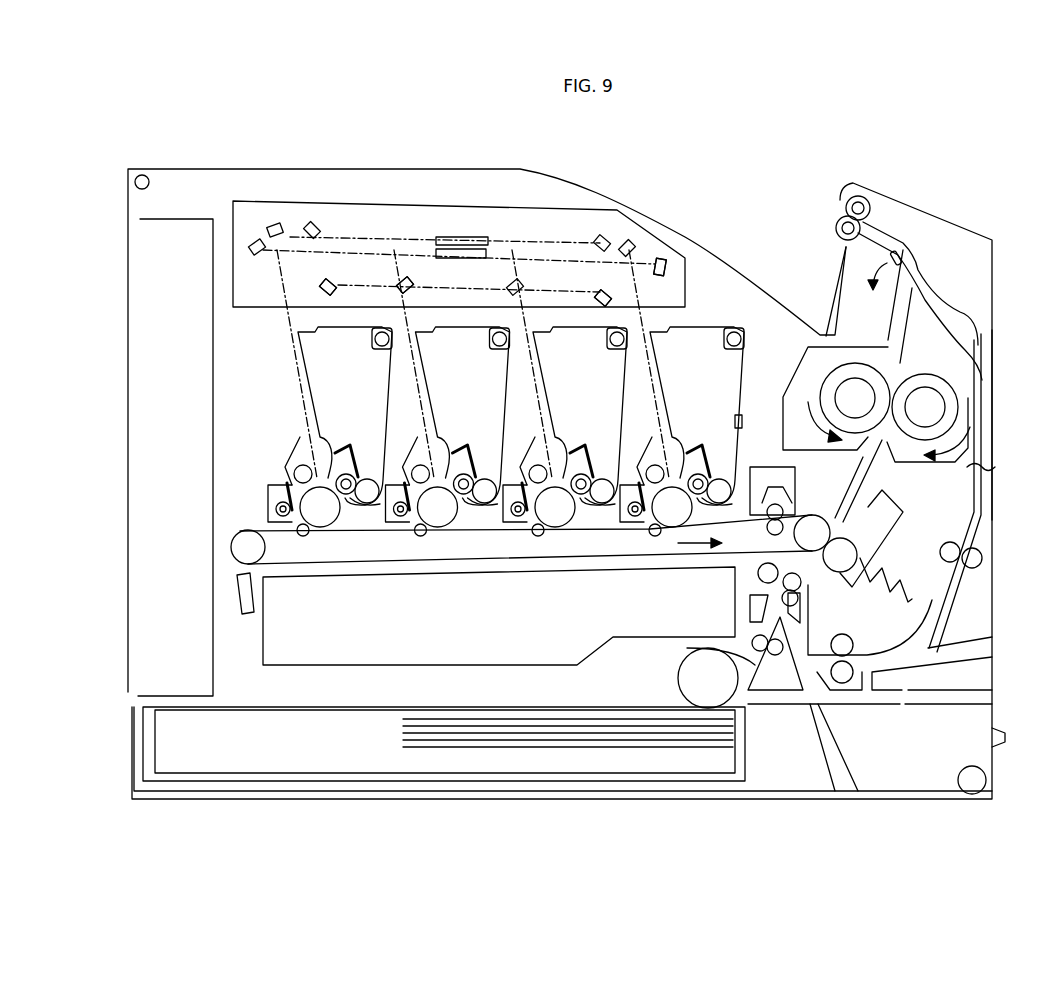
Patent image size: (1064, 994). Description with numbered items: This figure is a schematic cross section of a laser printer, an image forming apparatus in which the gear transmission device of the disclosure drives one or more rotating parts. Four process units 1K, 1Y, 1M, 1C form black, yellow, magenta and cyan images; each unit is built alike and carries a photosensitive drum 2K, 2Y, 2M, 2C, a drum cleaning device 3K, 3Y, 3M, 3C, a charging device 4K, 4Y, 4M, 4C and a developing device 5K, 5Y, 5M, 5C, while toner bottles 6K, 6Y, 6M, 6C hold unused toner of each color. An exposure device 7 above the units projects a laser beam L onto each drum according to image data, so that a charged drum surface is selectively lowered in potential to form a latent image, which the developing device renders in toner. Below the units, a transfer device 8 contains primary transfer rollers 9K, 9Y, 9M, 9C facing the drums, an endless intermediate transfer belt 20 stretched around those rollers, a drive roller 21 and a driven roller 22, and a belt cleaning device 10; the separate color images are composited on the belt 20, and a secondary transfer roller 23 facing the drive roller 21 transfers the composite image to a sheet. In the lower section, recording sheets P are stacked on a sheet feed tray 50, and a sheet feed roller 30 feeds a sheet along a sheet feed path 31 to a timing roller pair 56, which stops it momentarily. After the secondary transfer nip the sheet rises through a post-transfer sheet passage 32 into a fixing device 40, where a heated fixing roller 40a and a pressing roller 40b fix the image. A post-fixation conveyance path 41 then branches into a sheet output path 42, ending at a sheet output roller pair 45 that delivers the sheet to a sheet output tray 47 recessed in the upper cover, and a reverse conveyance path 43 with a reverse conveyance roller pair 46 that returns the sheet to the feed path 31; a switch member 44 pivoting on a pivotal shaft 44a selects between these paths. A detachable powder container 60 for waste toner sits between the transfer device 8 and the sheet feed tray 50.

The process unit 1C is at (295, 427).
The process unit 1M is at (415, 430).
The process unit 1Y is at (533, 430).
The process unit 1K is at (650, 432).
The photosensitive drum 2C is at (310, 517).
The photosensitive drum 2M is at (427, 517).
The photosensitive drum 2Y is at (545, 517).
The photosensitive drum 2K is at (662, 517).
The drum cleaning device 3C is at (272, 490).
The drum cleaning device 3M is at (395, 490).
The drum cleaning device 3Y is at (513, 491).
The drum cleaning device 3K is at (630, 492).
The charging device 4C is at (292, 450).
The charging device 4M is at (417, 443).
The charging device 4Y is at (534, 443).
The charging device 4K is at (650, 445).
The developing device 5C is at (367, 512).
The developing device 5M is at (484, 512).
The developing device 5Y is at (595, 512).
The developing device 5K is at (717, 513).
The toner bottle 6C is at (300, 327).
The toner bottle 6M is at (470, 327).
The toner bottle 6Y is at (567, 327).
The toner bottle 6K is at (710, 330).
The exposure device 7 is at (436, 210).
The transfer device 8 is at (228, 548).
The primary transfer roller 9C is at (303, 537).
The primary transfer roller 9M is at (420, 537).
The primary transfer roller 9Y is at (538, 537).
The primary transfer roller 9K is at (655, 537).
The belt cleaning device 10 is at (766, 466).
The intermediate transfer belt 20 is at (358, 563).
The drive roller 21 is at (812, 515).
The driven roller 22 is at (247, 530).
The secondary transfer roller 23 is at (858, 548).
The sheet feed roller 30 is at (677, 681).
The sheet feed path 31 is at (757, 662).
The post-transfer sheet passage 32 is at (868, 468).
The fixing device 40 is at (790, 366).
The fixing roller 40a is at (855, 363).
The pressing roller 40b is at (925, 374).
The post-fixation conveyance path 41 is at (902, 313).
The sheet output path 42 is at (892, 238).
The reverse conveyance path 43 is at (975, 533).
The switch member 44 is at (908, 263).
The pivotal shaft 44a is at (912, 290).
The sheet output roller pair 45 is at (837, 212).
The reverse conveyance roller pair 46 is at (962, 577).
The sheet output tray 47 is at (618, 200).
The sheet feed tray 50 is at (973, 718).
The timing roller pair 56 is at (752, 570).
The powder container 60 is at (262, 657).
The laser beam L is at (648, 286).
The recording sheet P is at (632, 748).